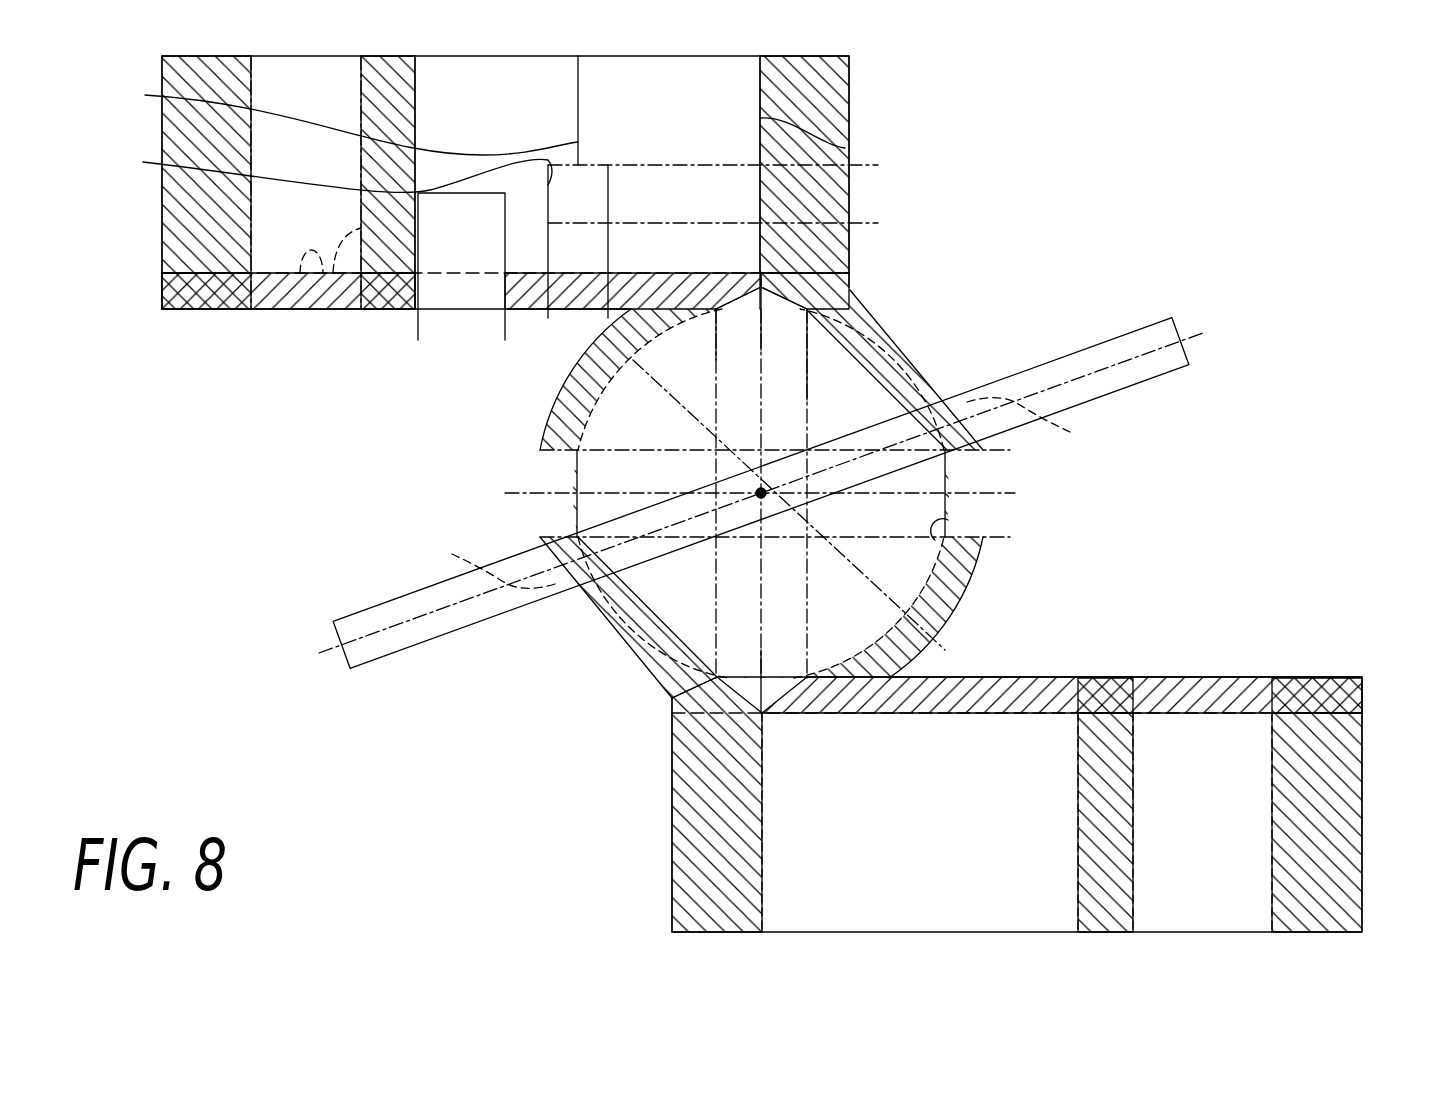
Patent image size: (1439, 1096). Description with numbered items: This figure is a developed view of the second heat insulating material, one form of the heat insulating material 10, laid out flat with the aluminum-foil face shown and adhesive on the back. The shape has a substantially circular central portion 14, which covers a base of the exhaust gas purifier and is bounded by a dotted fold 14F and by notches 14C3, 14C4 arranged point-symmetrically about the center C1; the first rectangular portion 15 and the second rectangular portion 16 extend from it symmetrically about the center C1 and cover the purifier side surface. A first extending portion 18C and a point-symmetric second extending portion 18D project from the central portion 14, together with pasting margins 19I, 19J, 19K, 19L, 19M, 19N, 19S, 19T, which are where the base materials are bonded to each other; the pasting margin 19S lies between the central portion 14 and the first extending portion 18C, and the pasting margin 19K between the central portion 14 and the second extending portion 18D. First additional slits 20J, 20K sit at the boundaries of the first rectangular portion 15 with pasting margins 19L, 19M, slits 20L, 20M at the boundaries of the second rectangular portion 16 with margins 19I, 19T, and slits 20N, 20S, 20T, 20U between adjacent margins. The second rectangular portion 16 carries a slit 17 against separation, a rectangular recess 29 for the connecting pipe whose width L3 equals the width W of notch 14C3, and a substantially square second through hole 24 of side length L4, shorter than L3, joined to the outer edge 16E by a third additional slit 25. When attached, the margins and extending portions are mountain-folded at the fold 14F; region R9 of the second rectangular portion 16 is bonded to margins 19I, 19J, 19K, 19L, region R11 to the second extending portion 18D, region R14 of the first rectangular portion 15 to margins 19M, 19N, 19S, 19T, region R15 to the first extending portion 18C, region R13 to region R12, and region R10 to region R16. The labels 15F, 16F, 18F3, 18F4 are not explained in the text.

The heat insulating material 10 is at (372, 842).
The central portion 14 is at (960, 568).
The notch 14C3 is at (540, 450).
The notch 14C4 is at (983, 537).
The fold 14F is at (660, 682).
The first rectangular portion 15 is at (1364, 800).
The face 15F is at (1170, 713).
The second rectangular portion 16 is at (855, 80).
The outer edge of the second rectangular portion 16E is at (737, 52).
The face 16F is at (310, 310).
The slit 17 is at (845, 148).
The first extending portion 18C is at (1188, 360).
The second extending portion 18D is at (336, 620).
The face 18F3 is at (1043, 422).
The face 18F4 is at (482, 563).
The pasting margin 19I is at (608, 343).
The pasting margin 19J is at (553, 423).
The pasting margin 19K is at (553, 580).
The pasting margin 19L is at (637, 675).
The pasting margin 19M is at (900, 645).
The pasting margin 19N is at (940, 598).
The pasting margin 19S is at (973, 420).
The pasting margin 19T is at (902, 333).
The first additional slit 20J is at (690, 722).
The first additional slit 20K is at (836, 678).
The first additional slit 20L is at (697, 307).
The first additional slit 20M is at (830, 293).
The first additional slit 20N is at (572, 367).
The first additional slit 20S is at (598, 628).
The first additional slit 20T is at (920, 630).
The first additional slit 20U is at (947, 390).
The second through hole 24 is at (304, 174).
The third additional slit 25 is at (345, 120).
The recess 29 is at (418, 313).
The center of the central portion C1 is at (761, 493).
The width of the recess L3 is at (505, 333).
The side length of the second through hole L4 is at (865, 165).
The width of the notch W is at (548, 537).
The region R9 is at (303, 282).
The region R10 is at (843, 112).
The region R11 is at (338, 310).
The region R12 is at (172, 242).
The region R13 is at (780, 868).
The region R14 is at (1057, 697).
The region R15 is at (1135, 747).
The region R16 is at (1272, 747).